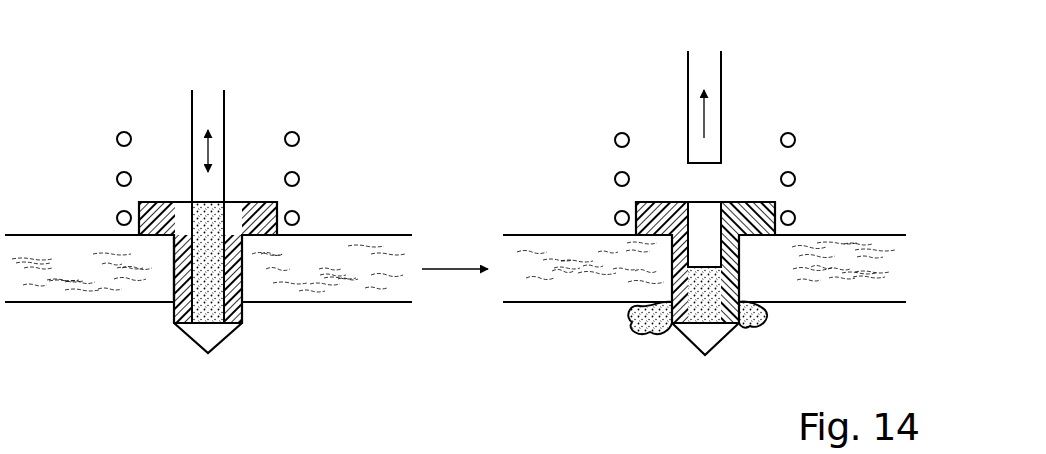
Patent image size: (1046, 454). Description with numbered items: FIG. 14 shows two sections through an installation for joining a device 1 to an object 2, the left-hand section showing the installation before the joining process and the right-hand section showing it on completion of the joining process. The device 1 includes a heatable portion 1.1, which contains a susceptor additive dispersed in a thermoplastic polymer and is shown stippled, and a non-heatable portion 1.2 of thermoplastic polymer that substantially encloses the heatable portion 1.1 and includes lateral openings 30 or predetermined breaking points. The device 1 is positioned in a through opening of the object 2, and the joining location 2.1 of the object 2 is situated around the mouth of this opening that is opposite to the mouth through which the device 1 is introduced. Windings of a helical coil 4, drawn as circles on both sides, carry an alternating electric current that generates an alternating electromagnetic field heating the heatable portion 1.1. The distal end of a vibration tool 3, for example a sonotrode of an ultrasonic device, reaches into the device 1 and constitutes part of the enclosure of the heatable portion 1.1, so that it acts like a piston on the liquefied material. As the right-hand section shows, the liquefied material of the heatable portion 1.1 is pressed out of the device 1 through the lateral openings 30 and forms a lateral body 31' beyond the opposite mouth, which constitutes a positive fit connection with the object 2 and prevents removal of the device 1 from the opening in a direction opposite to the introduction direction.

The device 1 is at (202, 225).
The heatable portion 1.1 is at (215, 312).
The non-heatable portion 1.2 is at (248, 213).
The object 2 is at (348, 282).
The joining location 2.1 is at (167, 308).
The vibration tool 3 is at (208, 108).
The helical coil 4 is at (300, 141).
The lateral openings 30 is at (250, 312).
The lateral body 31' is at (748, 336).